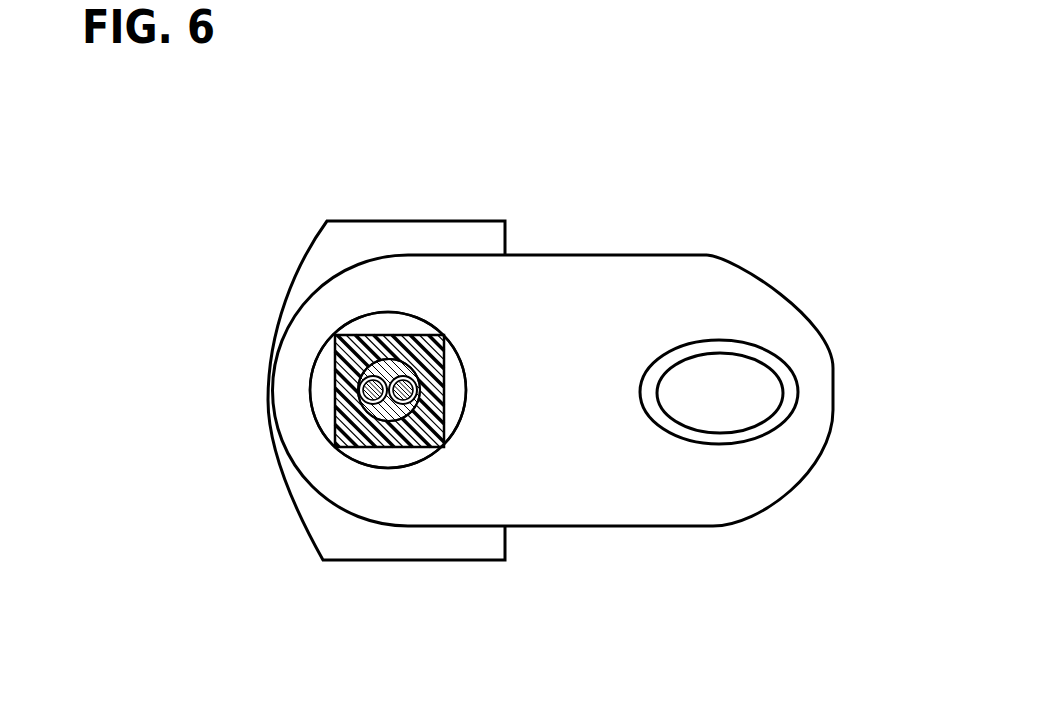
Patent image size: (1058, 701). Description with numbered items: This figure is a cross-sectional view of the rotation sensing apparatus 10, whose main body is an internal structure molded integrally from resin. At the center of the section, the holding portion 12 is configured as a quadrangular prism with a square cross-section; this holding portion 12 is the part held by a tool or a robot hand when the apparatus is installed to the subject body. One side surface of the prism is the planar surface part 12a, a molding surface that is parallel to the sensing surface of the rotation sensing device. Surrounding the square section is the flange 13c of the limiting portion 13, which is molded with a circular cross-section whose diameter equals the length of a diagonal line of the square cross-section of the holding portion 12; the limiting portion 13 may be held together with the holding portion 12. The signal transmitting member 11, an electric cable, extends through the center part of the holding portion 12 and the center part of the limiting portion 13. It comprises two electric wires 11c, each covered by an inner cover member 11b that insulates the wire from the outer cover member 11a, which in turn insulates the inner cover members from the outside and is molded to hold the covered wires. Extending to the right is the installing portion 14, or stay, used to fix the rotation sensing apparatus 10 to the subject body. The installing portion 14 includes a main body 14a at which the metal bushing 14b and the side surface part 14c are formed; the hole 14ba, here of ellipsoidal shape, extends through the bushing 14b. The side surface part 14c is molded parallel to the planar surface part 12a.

The rotation sensing apparatus 10 is at (248, 252).
The signal transmitting member 11 is at (187, 363).
The cover member 11a is at (366, 378).
The cover members 11b is at (403, 386).
The electric wires 11c is at (380, 418).
The holding portion 12 is at (420, 357).
The planar surface part 12a is at (421, 396).
The limiting portion 13 is at (388, 390).
The flange 13c is at (386, 459).
The installing portion 14 is at (849, 215).
The main body 14a is at (457, 240).
The bushing 14b is at (722, 347).
The hole 14ba is at (755, 358).
The side surface part 14c is at (833, 393).